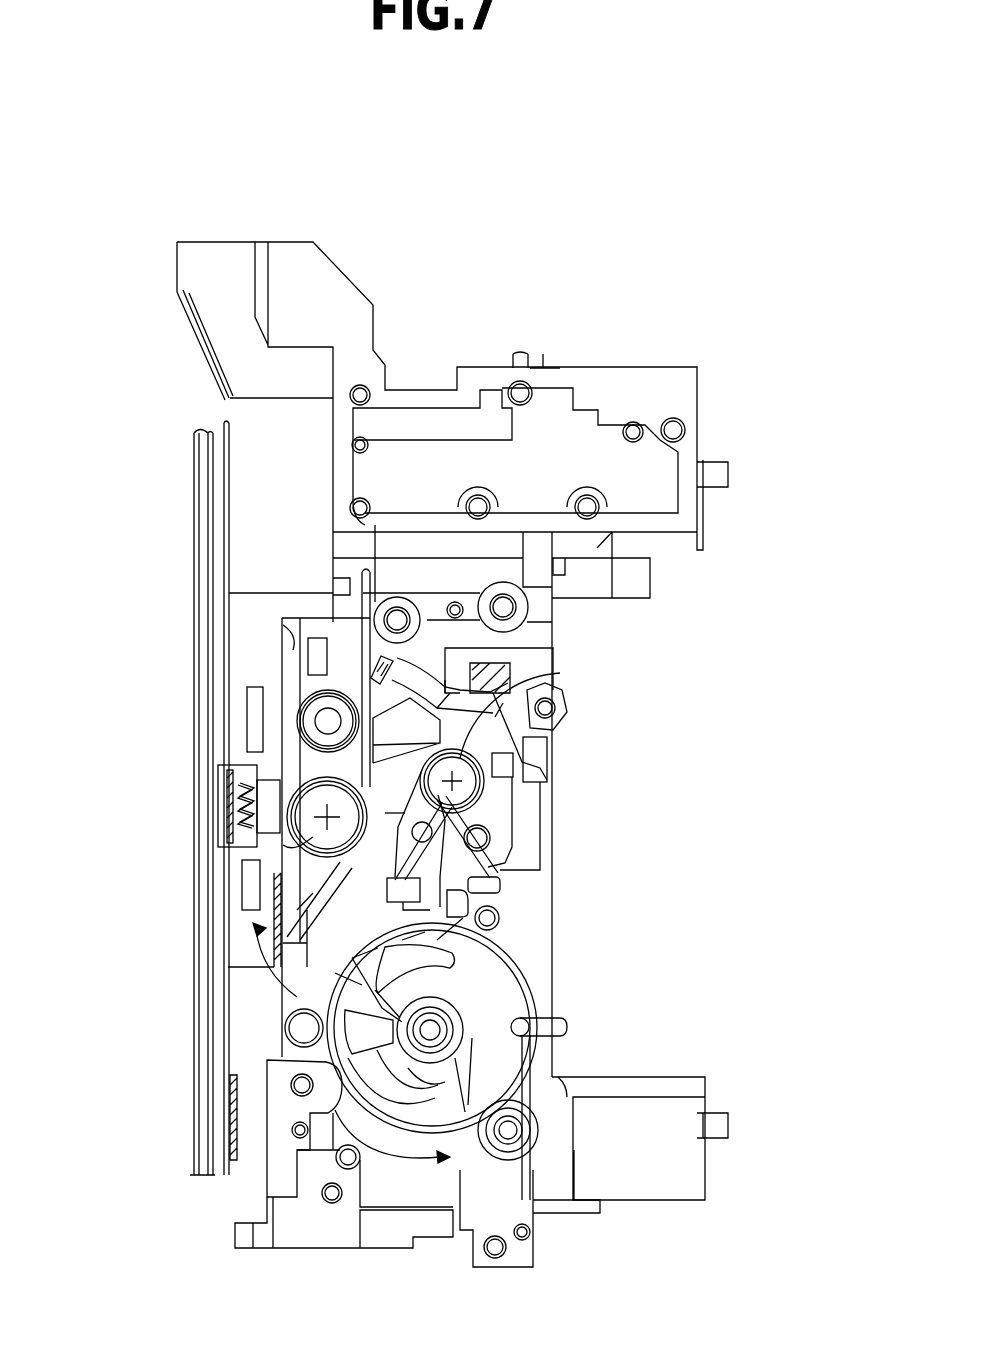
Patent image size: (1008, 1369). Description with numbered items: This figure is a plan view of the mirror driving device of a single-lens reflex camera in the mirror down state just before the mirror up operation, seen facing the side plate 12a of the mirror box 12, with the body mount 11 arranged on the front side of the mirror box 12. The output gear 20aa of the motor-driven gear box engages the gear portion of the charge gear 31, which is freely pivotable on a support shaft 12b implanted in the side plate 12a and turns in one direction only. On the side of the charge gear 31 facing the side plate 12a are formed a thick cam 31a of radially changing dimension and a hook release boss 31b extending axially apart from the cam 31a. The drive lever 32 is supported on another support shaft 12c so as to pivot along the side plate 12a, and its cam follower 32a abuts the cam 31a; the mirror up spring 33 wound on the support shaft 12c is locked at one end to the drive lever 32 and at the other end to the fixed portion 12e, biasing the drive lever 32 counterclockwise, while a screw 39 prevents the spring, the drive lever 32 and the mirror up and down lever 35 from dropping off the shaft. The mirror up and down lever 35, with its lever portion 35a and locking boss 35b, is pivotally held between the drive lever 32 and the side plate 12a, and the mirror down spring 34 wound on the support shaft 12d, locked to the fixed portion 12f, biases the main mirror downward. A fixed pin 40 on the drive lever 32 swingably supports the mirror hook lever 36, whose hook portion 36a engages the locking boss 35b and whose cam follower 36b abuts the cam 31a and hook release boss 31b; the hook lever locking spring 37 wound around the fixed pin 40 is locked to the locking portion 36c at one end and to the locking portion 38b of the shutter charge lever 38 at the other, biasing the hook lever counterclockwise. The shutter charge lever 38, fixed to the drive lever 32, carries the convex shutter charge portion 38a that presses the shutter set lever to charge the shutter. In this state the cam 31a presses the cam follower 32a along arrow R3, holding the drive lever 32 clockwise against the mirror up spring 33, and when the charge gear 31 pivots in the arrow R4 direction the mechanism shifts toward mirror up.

The body mount 11 is at (200, 500).
The mirror box 12 is at (610, 380).
The side plate 12a is at (527, 637).
The support shaft 12b is at (452, 1120).
The support shaft 12c is at (174, 846).
The support shaft 12d is at (262, 742).
The fixed portion 12e is at (375, 527).
The fixed portion 12f is at (295, 657).
The output gear 20aa is at (531, 1150).
The charge gear 31 is at (503, 978).
The cam 31a is at (463, 1046).
The hook release boss 31b is at (525, 1025).
The drive lever 32 is at (532, 680).
The cam follower 32a is at (293, 1028).
The mirror up spring 33 is at (362, 604).
The mirror down spring 34 is at (298, 708).
The mirror up and down lever 35 is at (558, 790).
The lever portion 35a is at (553, 793).
The locking boss 35b is at (463, 910).
The mirror hook lever 36 is at (300, 940).
The hook portion 36a is at (480, 925).
The cam follower 36b is at (287, 1023).
The locking portion 36c is at (280, 893).
The hook lever locking spring 37 is at (226, 776).
The shutter charge lever 38 is at (503, 850).
The shutter charge portion 38a is at (550, 822).
The locking portion 38b is at (470, 883).
The screw 39 is at (283, 847).
The fixed pin 40 is at (474, 777).
The arrow R3 is at (300, 997).
The arrow R4 is at (377, 1160).